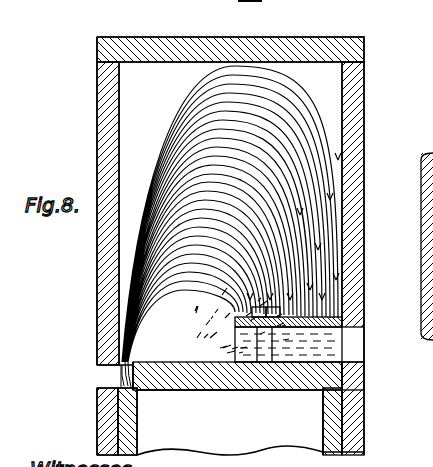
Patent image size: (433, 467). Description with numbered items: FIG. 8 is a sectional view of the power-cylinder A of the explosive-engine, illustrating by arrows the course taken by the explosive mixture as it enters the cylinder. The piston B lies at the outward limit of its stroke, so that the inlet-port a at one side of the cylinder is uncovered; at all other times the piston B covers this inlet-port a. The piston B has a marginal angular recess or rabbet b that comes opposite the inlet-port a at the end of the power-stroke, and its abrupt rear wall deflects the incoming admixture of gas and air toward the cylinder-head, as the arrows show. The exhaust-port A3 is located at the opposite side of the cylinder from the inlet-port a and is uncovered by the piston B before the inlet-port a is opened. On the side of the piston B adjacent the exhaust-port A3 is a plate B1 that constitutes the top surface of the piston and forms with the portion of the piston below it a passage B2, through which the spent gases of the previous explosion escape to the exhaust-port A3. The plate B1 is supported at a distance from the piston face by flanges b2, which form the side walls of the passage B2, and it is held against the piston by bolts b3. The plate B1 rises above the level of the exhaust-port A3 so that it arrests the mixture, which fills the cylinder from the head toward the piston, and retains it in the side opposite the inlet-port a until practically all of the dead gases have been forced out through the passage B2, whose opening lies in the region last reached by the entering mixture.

The power-cylinder A is at (97, 134).
The inlet-port a is at (98, 381).
The marginal angular recess b is at (133, 378).
The flanges b2 is at (160, 392).
The bolts b3 is at (226, 320).
The piston B is at (170, 428).
The plate B1 is at (346, 321).
The passage B2 is at (343, 351).
The exhaust-port A3 is at (358, 366).